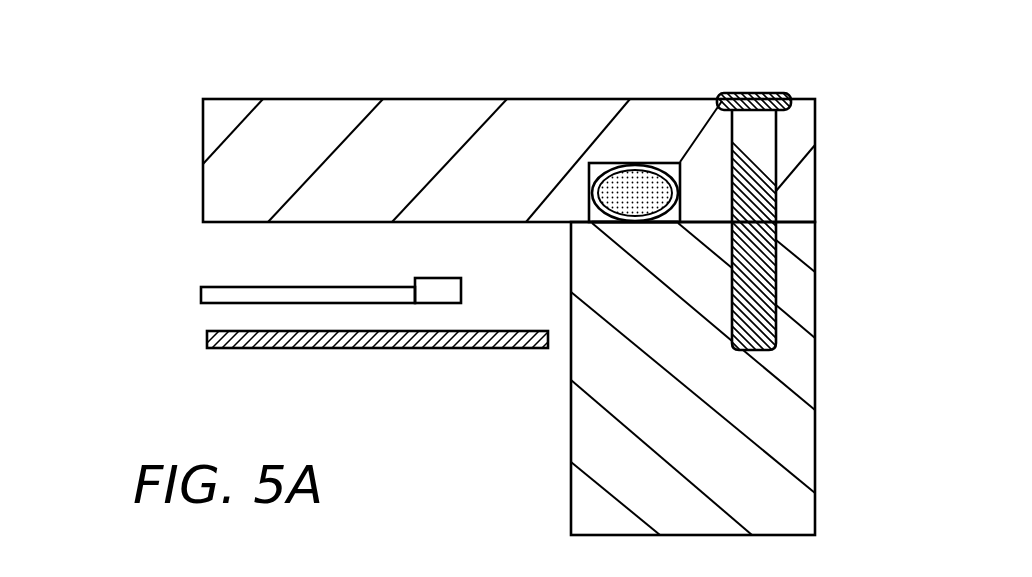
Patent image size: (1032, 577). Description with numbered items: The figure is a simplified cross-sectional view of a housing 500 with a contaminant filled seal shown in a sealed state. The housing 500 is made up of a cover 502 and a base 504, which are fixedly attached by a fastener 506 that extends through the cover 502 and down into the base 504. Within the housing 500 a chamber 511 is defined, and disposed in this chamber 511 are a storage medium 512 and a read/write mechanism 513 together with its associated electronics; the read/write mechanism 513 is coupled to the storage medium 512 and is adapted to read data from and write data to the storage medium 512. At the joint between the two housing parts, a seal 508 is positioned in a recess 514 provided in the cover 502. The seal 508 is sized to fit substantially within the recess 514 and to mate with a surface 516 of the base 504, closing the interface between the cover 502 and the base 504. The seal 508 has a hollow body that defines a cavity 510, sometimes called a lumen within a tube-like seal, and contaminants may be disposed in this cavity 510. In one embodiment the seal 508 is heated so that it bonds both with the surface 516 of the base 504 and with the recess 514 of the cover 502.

The housing 500 is at (157, 82).
The cover 502 is at (280, 98).
The base 504 is at (815, 378).
The fastener 506 is at (757, 92).
The seal 508 is at (633, 167).
The cavity 510 is at (608, 163).
The chamber 511 is at (445, 405).
The storage medium 512 is at (283, 350).
The read/write mechanism 513 is at (232, 283).
The recess 514 is at (632, 190).
The surface 516 is at (657, 223).